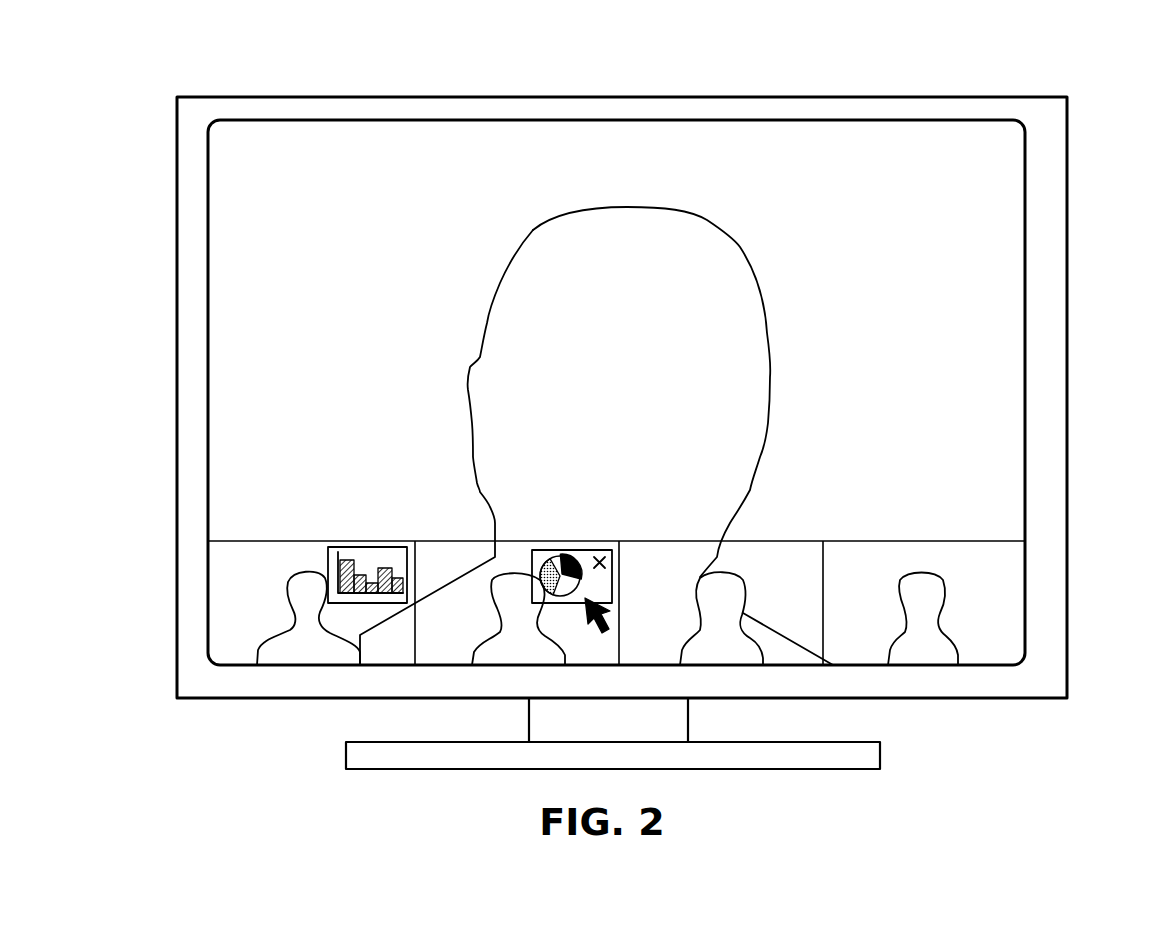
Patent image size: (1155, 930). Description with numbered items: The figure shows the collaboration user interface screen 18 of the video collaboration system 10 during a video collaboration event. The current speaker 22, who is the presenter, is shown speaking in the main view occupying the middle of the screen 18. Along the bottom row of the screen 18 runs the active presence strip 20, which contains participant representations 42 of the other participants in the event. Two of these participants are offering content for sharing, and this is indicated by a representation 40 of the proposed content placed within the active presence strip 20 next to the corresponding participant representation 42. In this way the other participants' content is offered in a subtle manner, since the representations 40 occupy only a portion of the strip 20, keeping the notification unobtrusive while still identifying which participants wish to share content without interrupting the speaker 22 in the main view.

The system 10 is at (1066, 67).
The user interface screen 18 is at (788, 120).
The active presence strip 20 is at (213, 592).
The current speaker 22 is at (740, 247).
The representation of content 40 is at (381, 548).
The participant representation 42 is at (295, 573).